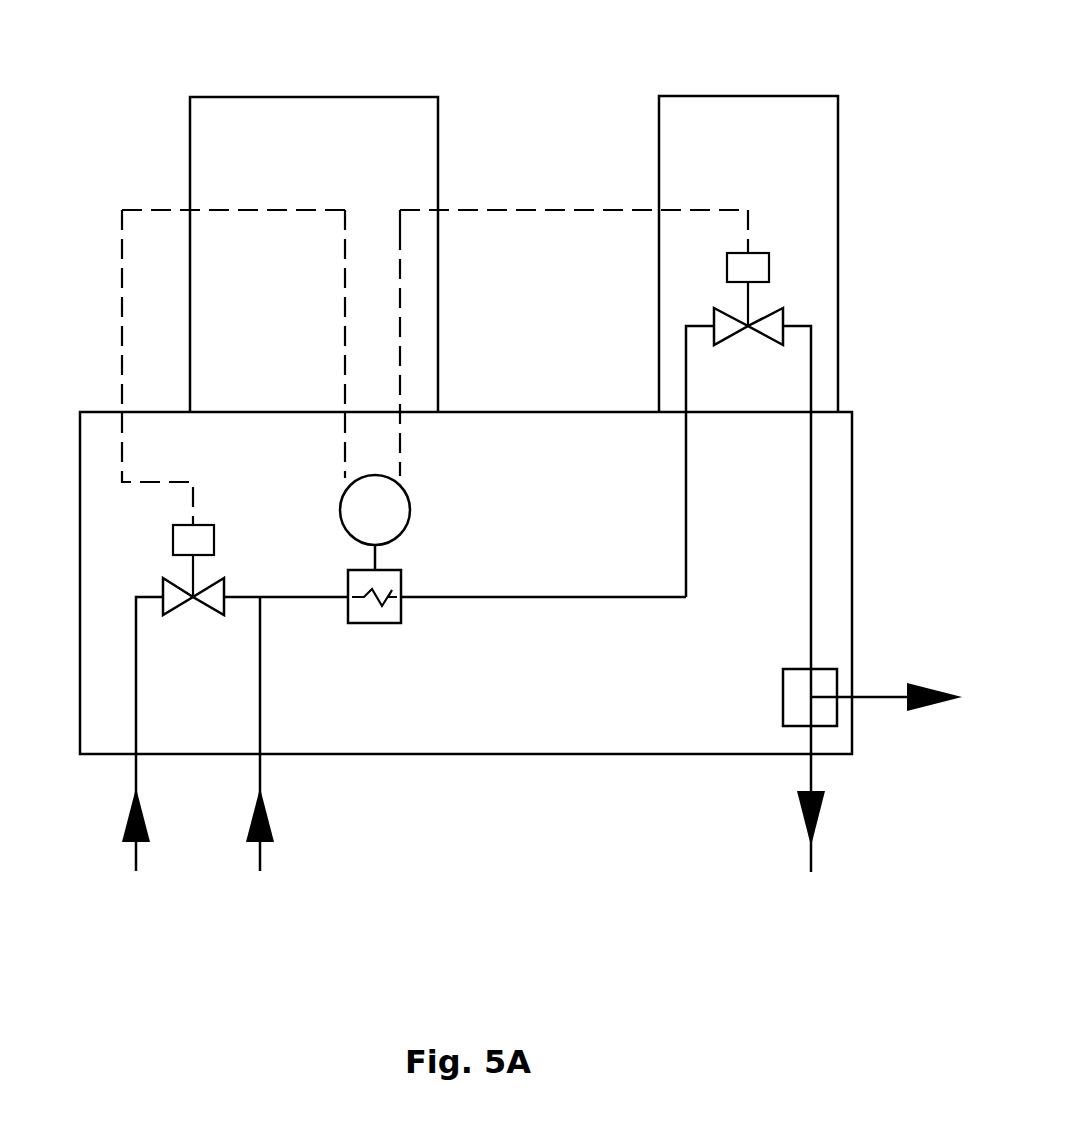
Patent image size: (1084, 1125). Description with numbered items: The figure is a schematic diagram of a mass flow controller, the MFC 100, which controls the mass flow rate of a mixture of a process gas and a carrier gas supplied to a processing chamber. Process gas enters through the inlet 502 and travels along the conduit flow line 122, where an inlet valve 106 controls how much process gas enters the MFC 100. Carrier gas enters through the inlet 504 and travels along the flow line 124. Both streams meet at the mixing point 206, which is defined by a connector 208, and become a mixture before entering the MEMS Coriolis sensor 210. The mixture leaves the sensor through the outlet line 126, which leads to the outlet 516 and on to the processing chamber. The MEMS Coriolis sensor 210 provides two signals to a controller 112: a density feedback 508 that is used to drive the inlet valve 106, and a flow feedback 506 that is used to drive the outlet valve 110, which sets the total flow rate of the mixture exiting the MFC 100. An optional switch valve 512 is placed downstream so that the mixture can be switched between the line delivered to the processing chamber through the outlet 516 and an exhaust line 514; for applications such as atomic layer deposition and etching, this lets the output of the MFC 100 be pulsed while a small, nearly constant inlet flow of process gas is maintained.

The MFC 100 is at (128, 62).
The controller 112 is at (345, 97).
The flow feedback 506 is at (428, 210).
The density feedback 508 is at (121, 338).
The outlet valve 110 is at (783, 310).
The MEMS Coriolis sensor 210 is at (410, 500).
The inlet valve 106 is at (163, 575).
The conduit flow line 122 is at (135, 652).
The inlet 502 is at (135, 757).
The flow line 124 is at (260, 712).
The inlet 504 is at (260, 757).
The connector 208 is at (260, 597).
The mixing point 206 is at (244, 616).
The outlet line 126 is at (568, 597).
The switch valve 512 is at (783, 682).
The exhaust line 514 is at (862, 695).
The outlet 516 is at (810, 757).